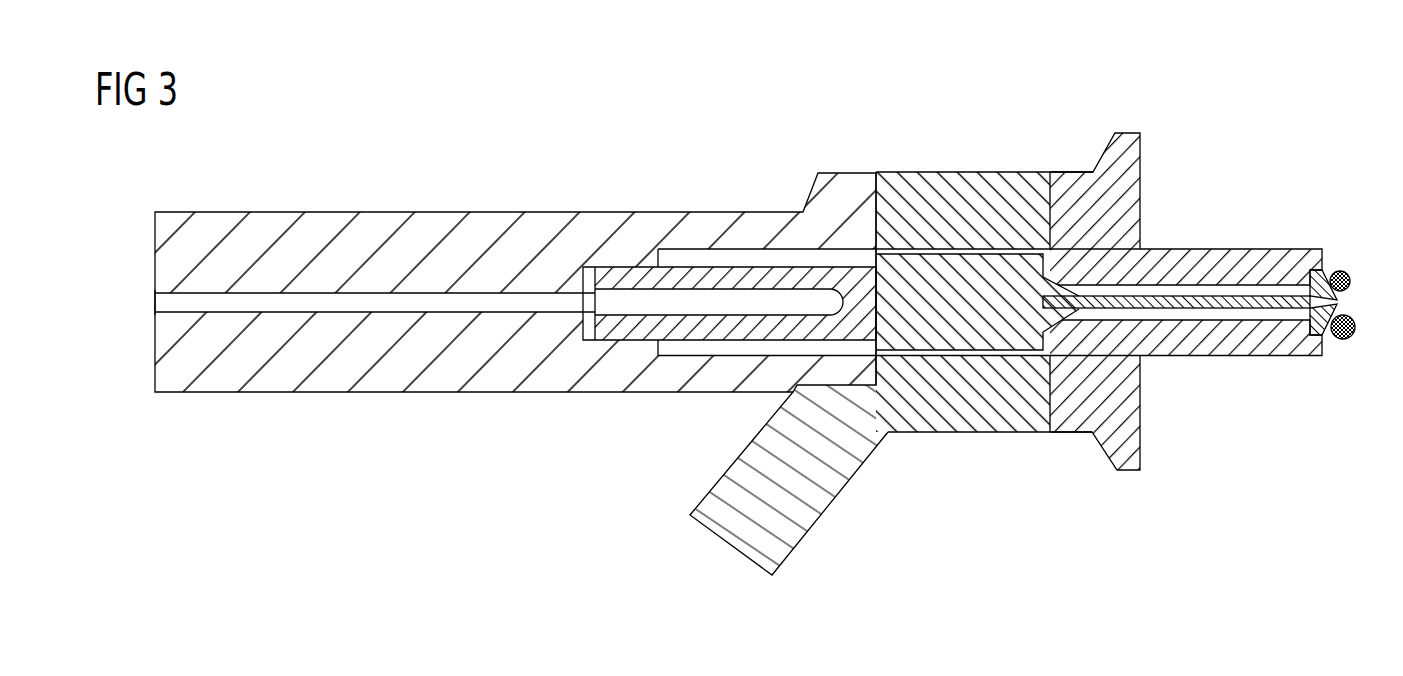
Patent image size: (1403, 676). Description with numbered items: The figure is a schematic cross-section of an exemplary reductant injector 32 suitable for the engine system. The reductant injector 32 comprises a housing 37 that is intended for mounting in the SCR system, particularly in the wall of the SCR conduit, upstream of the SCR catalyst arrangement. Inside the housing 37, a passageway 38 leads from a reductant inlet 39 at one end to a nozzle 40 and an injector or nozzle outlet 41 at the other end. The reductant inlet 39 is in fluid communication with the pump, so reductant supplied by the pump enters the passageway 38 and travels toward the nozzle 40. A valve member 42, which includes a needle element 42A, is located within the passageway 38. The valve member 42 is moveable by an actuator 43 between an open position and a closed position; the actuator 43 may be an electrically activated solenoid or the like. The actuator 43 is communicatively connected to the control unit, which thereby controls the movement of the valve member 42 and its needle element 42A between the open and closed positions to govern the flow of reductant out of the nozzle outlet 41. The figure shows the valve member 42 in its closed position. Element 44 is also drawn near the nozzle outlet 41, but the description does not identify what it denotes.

The reductant injector 32 is at (920, 146).
The housing 37 is at (638, 212).
The passageway 38 is at (314, 302).
The reductant inlet 39 is at (155, 300).
The nozzle 40 is at (1331, 276).
The nozzle outlet 41 is at (1340, 302).
The valve member 42 is at (694, 322).
The needle element 42A is at (1220, 298).
The actuator 43 is at (998, 421).
The droplets 44 is at (1344, 274).